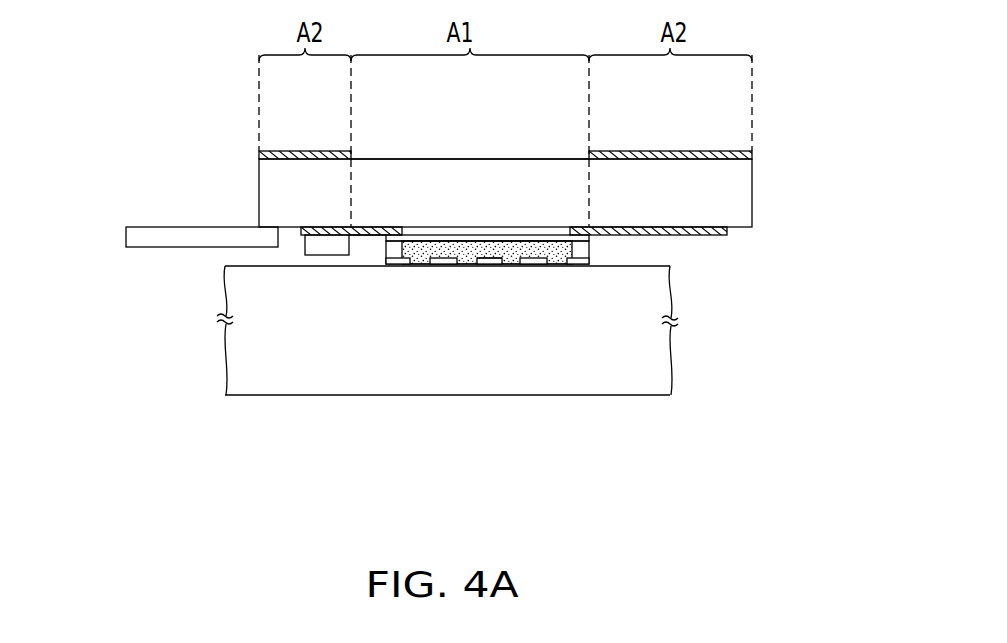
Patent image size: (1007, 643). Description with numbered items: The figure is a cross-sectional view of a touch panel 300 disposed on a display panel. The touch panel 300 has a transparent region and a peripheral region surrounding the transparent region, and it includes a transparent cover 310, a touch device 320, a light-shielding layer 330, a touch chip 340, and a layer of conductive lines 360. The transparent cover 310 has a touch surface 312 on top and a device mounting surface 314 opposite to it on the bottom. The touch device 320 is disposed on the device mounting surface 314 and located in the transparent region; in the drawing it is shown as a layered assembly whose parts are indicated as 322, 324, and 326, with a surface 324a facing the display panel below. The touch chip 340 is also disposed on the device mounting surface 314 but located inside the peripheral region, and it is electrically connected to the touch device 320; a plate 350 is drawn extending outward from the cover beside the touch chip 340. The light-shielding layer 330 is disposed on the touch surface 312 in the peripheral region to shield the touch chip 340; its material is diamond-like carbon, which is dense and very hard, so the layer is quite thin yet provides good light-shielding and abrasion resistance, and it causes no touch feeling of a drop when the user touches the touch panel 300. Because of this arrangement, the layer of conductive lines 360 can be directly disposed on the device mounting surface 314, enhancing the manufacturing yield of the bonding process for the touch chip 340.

The touch panel 300 is at (222, 190).
The transparent cover 310 is at (743, 180).
The touch surface 312 is at (466, 157).
The device mounting surface 314 is at (359, 237).
The touch device 320 is at (618, 340).
The upper layer of assembly 322 is at (593, 240).
The light emitting elements 324 is at (593, 256).
The light emitting surface 324a is at (479, 264).
The carrier of assembly 326 is at (590, 264).
The light-shielding layer 330 is at (740, 151).
The touch chip 340 is at (297, 248).
The flexible circuit board 350 is at (135, 238).
The layer of conductive lines 360 is at (700, 229).